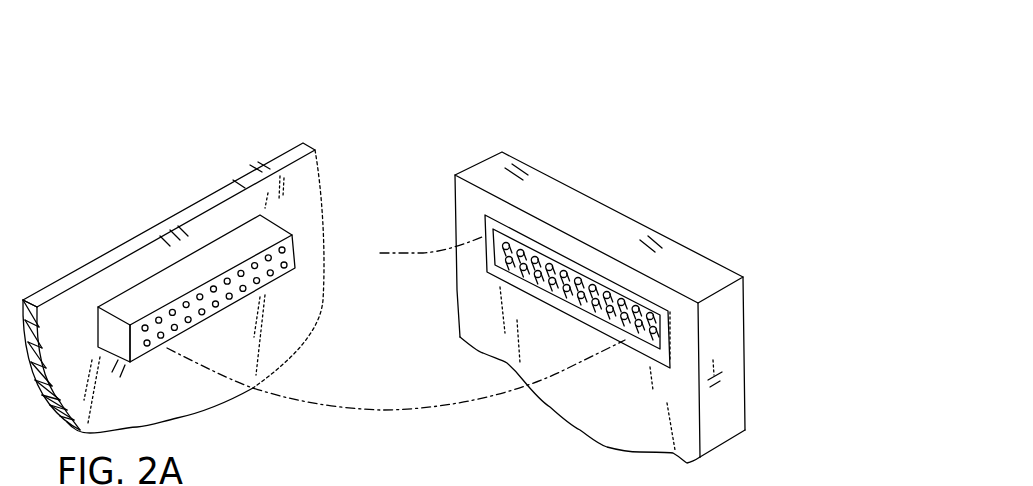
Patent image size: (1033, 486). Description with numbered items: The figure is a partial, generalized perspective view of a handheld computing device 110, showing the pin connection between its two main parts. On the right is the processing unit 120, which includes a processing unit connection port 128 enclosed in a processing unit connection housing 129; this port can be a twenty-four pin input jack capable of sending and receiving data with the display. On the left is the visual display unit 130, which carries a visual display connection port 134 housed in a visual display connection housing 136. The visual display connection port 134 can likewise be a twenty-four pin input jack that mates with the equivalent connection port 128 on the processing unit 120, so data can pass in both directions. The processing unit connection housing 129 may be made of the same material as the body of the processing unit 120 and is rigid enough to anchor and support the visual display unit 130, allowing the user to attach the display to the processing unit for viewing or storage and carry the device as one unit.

The handheld computing device 110 is at (622, 59).
The processing unit 120 is at (717, 255).
The processing unit connection port 128 is at (665, 322).
The processing unit connection housing 129 is at (665, 343).
The visual display unit 130 is at (273, 158).
The visual display connection port 134 is at (243, 288).
The visual display connection housing 136 is at (295, 268).